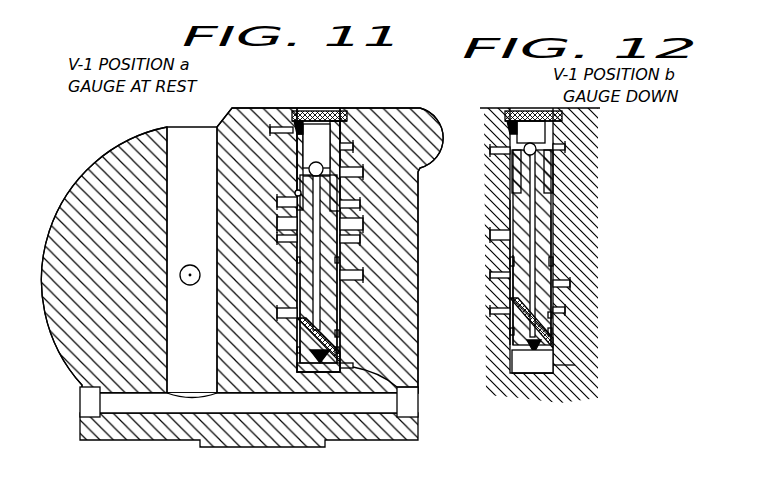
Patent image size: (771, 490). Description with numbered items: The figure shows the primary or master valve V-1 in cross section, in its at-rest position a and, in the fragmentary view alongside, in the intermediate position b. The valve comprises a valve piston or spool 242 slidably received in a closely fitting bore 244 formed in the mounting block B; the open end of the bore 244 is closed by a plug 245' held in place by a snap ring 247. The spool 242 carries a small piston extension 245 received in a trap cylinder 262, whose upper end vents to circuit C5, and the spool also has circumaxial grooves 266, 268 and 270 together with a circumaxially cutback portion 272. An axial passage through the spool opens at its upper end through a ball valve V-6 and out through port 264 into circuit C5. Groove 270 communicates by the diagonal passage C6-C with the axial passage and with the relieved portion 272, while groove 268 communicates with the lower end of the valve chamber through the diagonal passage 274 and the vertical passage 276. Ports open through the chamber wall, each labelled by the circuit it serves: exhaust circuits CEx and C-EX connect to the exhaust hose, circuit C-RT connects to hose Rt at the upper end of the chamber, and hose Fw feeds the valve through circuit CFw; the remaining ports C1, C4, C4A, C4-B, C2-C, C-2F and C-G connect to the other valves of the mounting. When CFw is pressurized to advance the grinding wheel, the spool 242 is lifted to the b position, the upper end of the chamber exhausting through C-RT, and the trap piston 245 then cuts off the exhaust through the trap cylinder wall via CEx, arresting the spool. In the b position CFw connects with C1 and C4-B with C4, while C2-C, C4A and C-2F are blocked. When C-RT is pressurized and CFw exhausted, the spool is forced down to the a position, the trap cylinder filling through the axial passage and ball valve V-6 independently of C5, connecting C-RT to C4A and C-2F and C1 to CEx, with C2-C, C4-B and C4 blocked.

In FIG. 11, the block B is at (99, 186).
In FIG. 11, the bore 244 is at (295, 192).
In FIG. 11, the circuit C5 is at (297, 128).
In FIG. 12, the circuit C5 is at (507, 132).
In FIG. 11, the master valve V-1 is at (311, 111).
In FIG. 11, the plug 245' is at (326, 92).
In FIG. 11, the snap ring 247 is at (327, 112).
In FIG. 11, the trap cylinder 262 is at (347, 132).
In FIG. 11, the circumaxial groove 266 is at (341, 260).
In FIG. 12, the circumaxial groove 266 is at (512, 262).
In FIG. 11, the circumaxially cutback portion 272 is at (337, 298).
In FIG. 12, the circumaxially cutback portion 272 is at (520, 277).
In FIG. 11, the valve piston 242 is at (341, 325).
In FIG. 12, the valve piston 242 is at (510, 330).
In FIG. 11, the circumaxial groove 268 is at (341, 337).
In FIG. 12, the circumaxial groove 268 is at (512, 352).
In FIG. 11, the circumaxial groove 270 is at (352, 353).
In FIG. 12, the circumaxial groove 270 is at (512, 362).
In FIG. 11, the circuit CFw is at (418, 403).
In FIG. 12, the circuit CFw is at (578, 367).
In FIG. 12, the port 264 is at (518, 111).
In FIG. 12, the ball valve V-6 is at (524, 150).
In FIG. 12, the piston extension 245 is at (543, 175).
In FIG. 12, the vertical passage 276 is at (513, 357).
In FIG. 12, the diagonal passage 274 is at (555, 347).
In FIG. 12, the circuit C4-A C4A is at (510, 202).
In FIG. 12, the circuit C2-C is at (510, 223).
In FIG. 12, the circuit C4-B is at (510, 242).
In FIG. 12, the diagonal passage C6-C is at (510, 302).
In FIG. 12, the circuit C1 is at (510, 315).
In FIG. 12, the circuit CEx is at (570, 147).
In FIG. 12, the circuit CRt C-RT is at (573, 173).
In FIG. 12, the circuit C2-F C-2F is at (566, 207).
In FIG. 12, the circuit CEx C-EX is at (566, 228).
In FIG. 12, the circuit C4 is at (556, 242).
In FIG. 12, the channel C-G is at (583, 296).